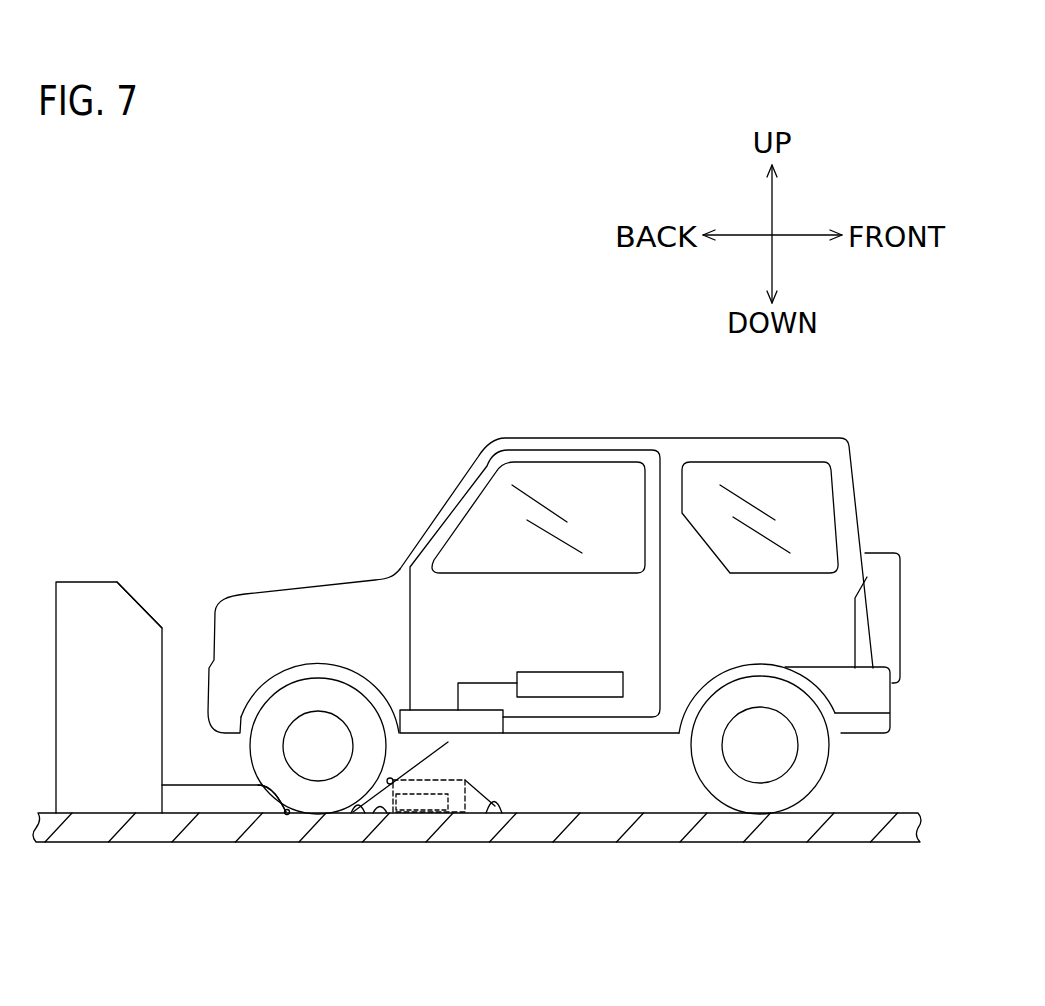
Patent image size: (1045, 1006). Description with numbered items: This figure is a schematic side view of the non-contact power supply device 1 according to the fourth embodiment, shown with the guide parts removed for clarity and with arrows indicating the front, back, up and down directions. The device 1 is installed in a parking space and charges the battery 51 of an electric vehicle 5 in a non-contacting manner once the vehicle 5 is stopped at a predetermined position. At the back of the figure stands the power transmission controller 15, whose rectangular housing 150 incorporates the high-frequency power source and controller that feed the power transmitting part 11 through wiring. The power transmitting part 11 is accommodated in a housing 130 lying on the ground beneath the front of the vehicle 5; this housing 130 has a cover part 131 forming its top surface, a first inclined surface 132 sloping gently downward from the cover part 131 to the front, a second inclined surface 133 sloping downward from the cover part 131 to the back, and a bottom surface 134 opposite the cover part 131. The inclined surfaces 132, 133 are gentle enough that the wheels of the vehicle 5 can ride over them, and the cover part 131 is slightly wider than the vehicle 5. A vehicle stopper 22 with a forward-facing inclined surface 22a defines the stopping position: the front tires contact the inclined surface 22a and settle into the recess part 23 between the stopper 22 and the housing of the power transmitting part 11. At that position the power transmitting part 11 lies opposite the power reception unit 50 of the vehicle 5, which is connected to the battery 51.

The non-contact power supply device 1 is at (148, 456).
The electric vehicle 5 is at (438, 441).
The power transmitting part 11 is at (478, 791).
The power transmission controller 15 is at (146, 599).
The vehicle stopper 22 is at (205, 802).
The inclined surface 22a is at (285, 812).
The recess part 23 is at (287, 815).
The power reception unit 50 is at (430, 710).
The battery 51 is at (580, 687).
The housing 130 is at (430, 867).
The cover part 131 is at (437, 752).
The first inclined surface 132 is at (500, 861).
The second inclined surface 133 is at (360, 812).
The bottom surface 134 is at (390, 812).
The housing 150 is at (88, 582).